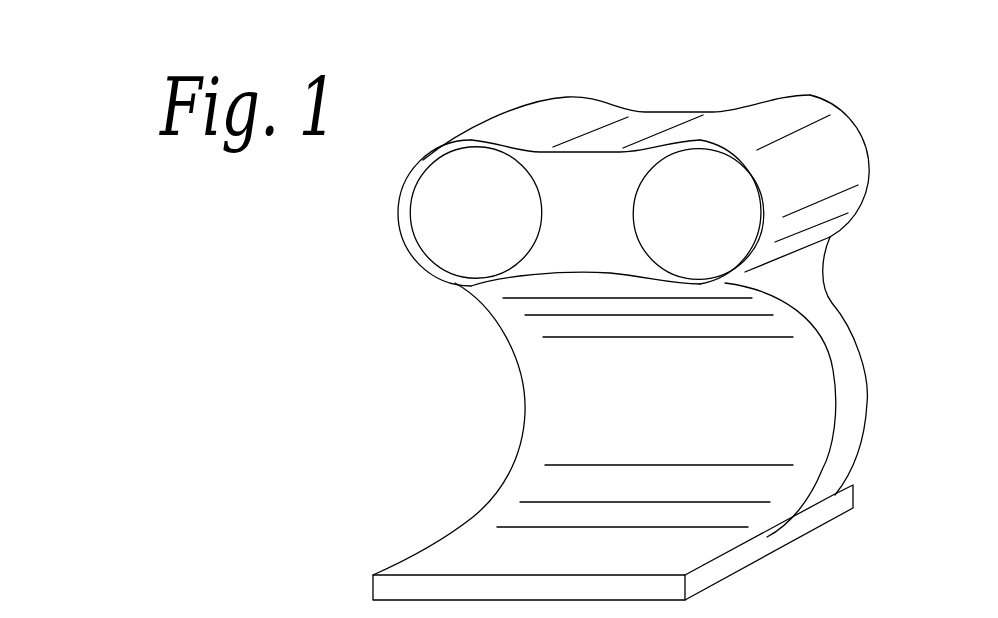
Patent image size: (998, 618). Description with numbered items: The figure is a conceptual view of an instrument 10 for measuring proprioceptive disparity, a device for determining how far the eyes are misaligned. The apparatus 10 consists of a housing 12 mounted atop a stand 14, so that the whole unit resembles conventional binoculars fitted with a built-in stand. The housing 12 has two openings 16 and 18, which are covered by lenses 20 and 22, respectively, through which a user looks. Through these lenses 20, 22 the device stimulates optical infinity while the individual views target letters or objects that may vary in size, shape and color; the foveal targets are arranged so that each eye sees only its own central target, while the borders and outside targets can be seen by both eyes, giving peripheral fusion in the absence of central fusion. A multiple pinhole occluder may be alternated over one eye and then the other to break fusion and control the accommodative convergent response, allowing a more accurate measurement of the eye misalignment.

The instrument 10 is at (897, 99).
The housing 12 is at (803, 120).
The stand 14 is at (808, 282).
The opening 16 is at (428, 260).
The opening 18 is at (653, 258).
The lens 20 is at (458, 180).
The lens 22 is at (688, 178).